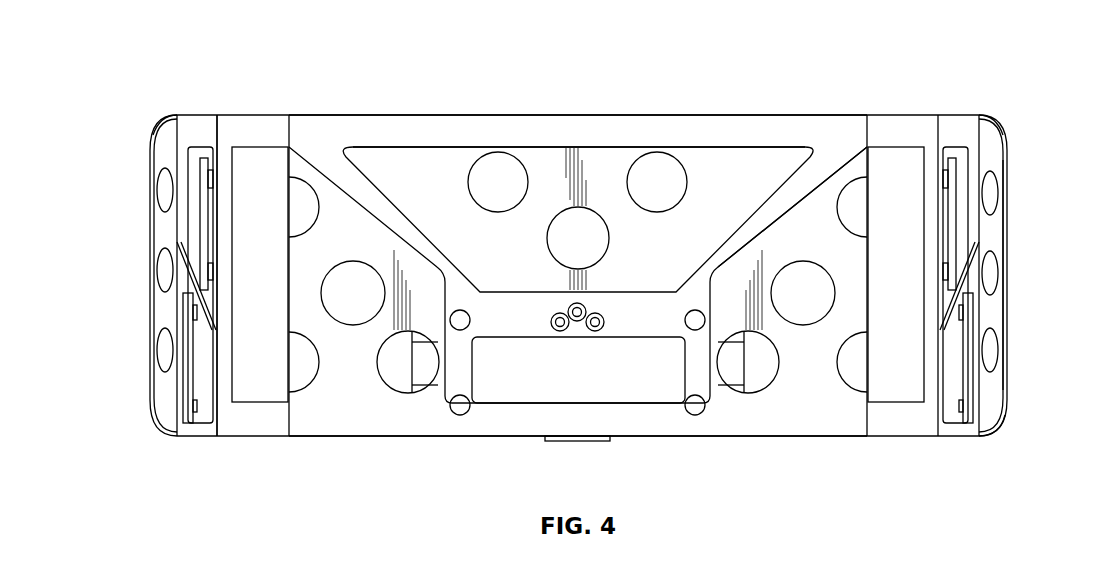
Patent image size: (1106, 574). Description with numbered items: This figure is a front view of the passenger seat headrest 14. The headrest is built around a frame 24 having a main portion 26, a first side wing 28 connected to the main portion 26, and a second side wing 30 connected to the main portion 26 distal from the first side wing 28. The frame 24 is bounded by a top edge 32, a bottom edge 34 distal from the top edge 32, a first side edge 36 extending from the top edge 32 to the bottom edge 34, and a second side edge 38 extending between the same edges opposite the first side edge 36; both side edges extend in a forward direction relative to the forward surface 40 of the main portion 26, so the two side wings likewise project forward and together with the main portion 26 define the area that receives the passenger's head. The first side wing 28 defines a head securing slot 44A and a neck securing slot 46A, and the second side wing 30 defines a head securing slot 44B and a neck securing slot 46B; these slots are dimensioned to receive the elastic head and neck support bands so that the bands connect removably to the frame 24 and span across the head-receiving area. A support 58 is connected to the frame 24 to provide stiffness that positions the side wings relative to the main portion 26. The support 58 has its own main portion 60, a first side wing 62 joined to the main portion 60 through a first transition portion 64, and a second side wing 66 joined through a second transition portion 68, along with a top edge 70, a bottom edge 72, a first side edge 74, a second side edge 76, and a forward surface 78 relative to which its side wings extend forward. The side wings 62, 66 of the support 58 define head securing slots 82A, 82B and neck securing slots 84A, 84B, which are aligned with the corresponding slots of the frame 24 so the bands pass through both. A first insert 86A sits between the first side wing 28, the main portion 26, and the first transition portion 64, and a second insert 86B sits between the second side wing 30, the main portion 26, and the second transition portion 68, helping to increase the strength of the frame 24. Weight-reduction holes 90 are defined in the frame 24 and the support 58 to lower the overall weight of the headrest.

The passenger seat headrest 14 is at (843, 53).
The frame 24 is at (985, 150).
The main portion 26 is at (363, 148).
The first side wing 28 is at (160, 130).
The second side wing 30 is at (988, 230).
The top edge 32 is at (170, 113).
The bottom edge 34 is at (978, 437).
The first side edge 36 is at (152, 258).
The second side edge 38 is at (1007, 357).
The forward surface 40 is at (750, 170).
The head securing slot 44A is at (196, 200).
The head securing slot 44B is at (980, 193).
The neck securing slot 46A is at (180, 347).
The neck securing slot 46B is at (980, 328).
The support 58 is at (623, 135).
The main portion 60 is at (572, 147).
The first side wing 62 is at (197, 117).
The first transition portion 64 is at (265, 120).
The second side wing 66 is at (983, 117).
The second transition portion 68 is at (897, 117).
The top edge 70 is at (332, 114).
The bottom edge 72 is at (397, 438).
The first side edge 74 is at (172, 410).
The second side edge 76 is at (980, 223).
The forward surface 78 is at (695, 150).
The head securing slot 82A is at (203, 147).
The head securing slot 82B is at (956, 120).
The neck securing slot 84A is at (187, 437).
The neck securing slot 84B is at (943, 436).
The first insert 86A is at (300, 252).
The second insert 86B is at (855, 252).
The weight-reduction holes 90 is at (500, 152).